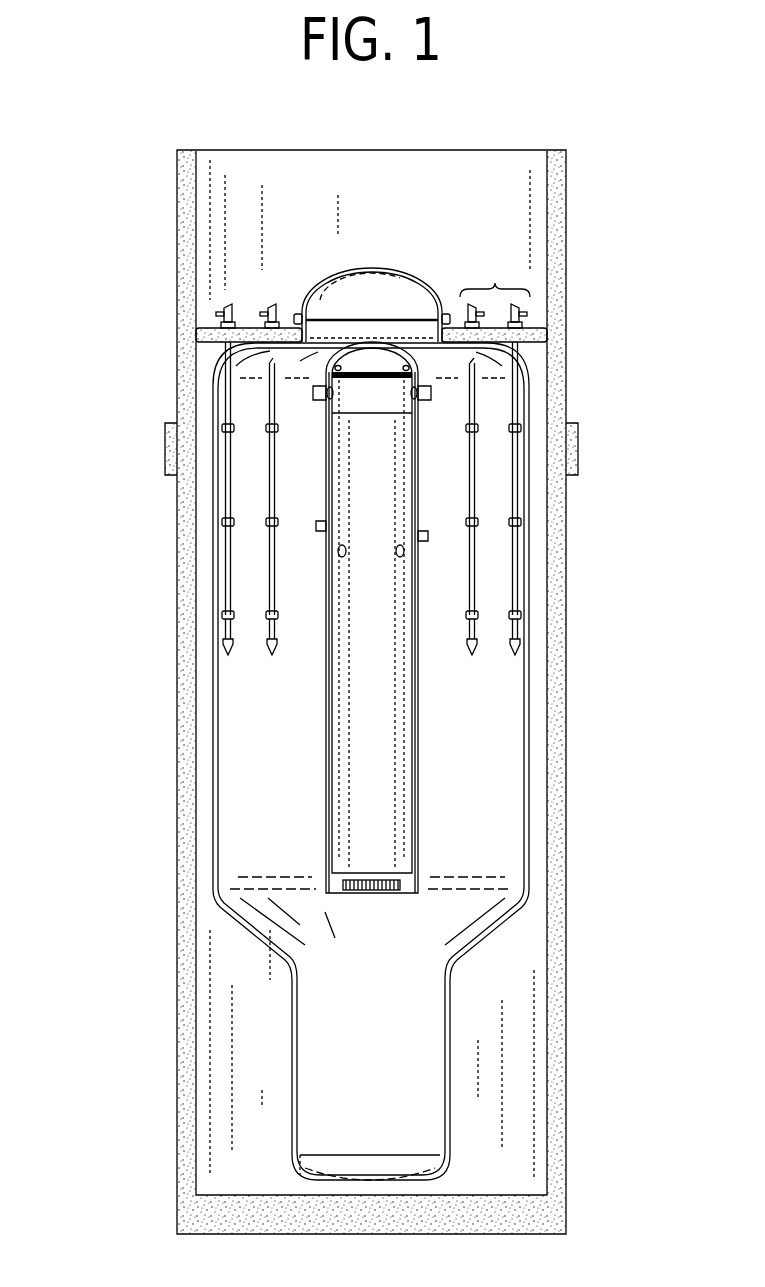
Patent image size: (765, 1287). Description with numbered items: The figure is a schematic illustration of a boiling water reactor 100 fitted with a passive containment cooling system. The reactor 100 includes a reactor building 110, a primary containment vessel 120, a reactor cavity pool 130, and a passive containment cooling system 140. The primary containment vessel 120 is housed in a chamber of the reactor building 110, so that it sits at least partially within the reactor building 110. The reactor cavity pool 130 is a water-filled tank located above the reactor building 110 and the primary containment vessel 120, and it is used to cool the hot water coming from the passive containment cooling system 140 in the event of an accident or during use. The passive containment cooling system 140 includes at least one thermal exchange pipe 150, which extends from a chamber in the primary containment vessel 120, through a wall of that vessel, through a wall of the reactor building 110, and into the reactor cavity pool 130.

The reactor 100 is at (118, 315).
The reactor building 110 is at (565, 565).
The primary containment vessel 120 is at (528, 740).
The reactor cavity pool 130 is at (523, 217).
The passive containment cooling system 140 is at (492, 282).
The thermal exchange pipe 150 is at (228, 553).